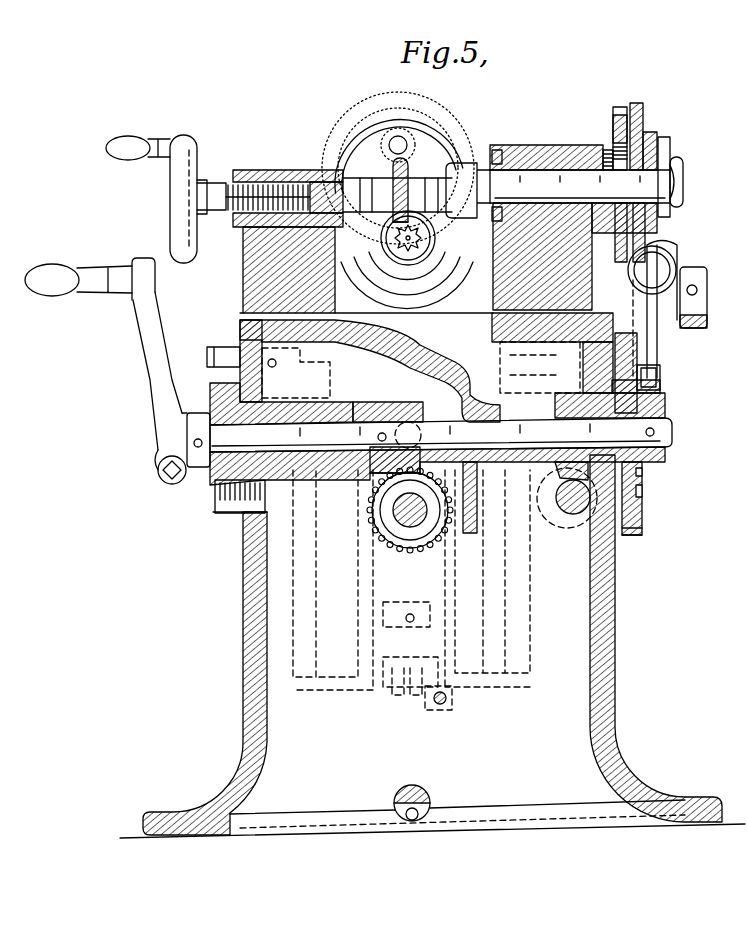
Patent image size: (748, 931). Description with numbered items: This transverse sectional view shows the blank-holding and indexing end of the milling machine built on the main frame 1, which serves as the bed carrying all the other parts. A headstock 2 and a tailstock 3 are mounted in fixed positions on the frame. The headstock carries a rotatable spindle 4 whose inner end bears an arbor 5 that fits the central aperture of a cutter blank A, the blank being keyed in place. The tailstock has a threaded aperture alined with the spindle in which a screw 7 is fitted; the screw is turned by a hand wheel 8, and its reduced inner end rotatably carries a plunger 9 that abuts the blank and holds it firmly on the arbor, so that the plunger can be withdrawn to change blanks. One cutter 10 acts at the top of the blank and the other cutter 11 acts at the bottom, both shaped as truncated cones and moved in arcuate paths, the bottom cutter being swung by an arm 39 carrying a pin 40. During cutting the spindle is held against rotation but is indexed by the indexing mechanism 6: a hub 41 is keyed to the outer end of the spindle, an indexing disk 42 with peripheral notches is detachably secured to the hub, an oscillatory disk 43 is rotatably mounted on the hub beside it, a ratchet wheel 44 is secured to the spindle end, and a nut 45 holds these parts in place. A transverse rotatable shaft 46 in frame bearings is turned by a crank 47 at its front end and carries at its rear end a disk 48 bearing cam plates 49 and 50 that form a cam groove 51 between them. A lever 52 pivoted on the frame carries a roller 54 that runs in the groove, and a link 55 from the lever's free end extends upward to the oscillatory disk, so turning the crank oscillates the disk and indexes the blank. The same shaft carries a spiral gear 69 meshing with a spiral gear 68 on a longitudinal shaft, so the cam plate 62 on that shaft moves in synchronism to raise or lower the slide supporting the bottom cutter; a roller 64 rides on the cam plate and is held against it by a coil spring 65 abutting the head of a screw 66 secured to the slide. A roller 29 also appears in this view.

The main frame 1 is at (615, 617).
The headstock 2 is at (523, 148).
The tailstock 3 is at (263, 170).
The spindle 4 is at (560, 172).
The arbor 5 is at (383, 208).
The indexing mechanism 6 is at (645, 167).
The screw 7 is at (290, 185).
The hand wheel 8 is at (186, 137).
The plunger 9 is at (392, 142).
The cutter 10 is at (403, 140).
The cutter 11 is at (413, 251).
The roller 29 is at (570, 512).
The arm 39 is at (628, 270).
The pin 40 is at (668, 233).
The hub 41 is at (602, 150).
The indexing disk 42 is at (622, 108).
The oscillatory disk 43 is at (645, 118).
The ratchet wheel 44 is at (656, 137).
The nut 45 is at (676, 165).
The rotatable shaft 46 is at (535, 423).
The crank 47 is at (90, 273).
The disk 48 is at (627, 540).
The cam plate 49 is at (642, 525).
The cam plate 50 is at (645, 471).
The cam groove 51 is at (648, 492).
The lever 52 is at (660, 378).
The roller 54 is at (643, 360).
The link 55 is at (677, 325).
The cam plate 62 is at (463, 535).
The roller 64 is at (432, 440).
The coil spring 65 is at (398, 797).
The screw 66 is at (413, 787).
The spiral gear 68 is at (403, 550).
The spiral gear 69 is at (403, 403).
The cutter blank A is at (378, 188).